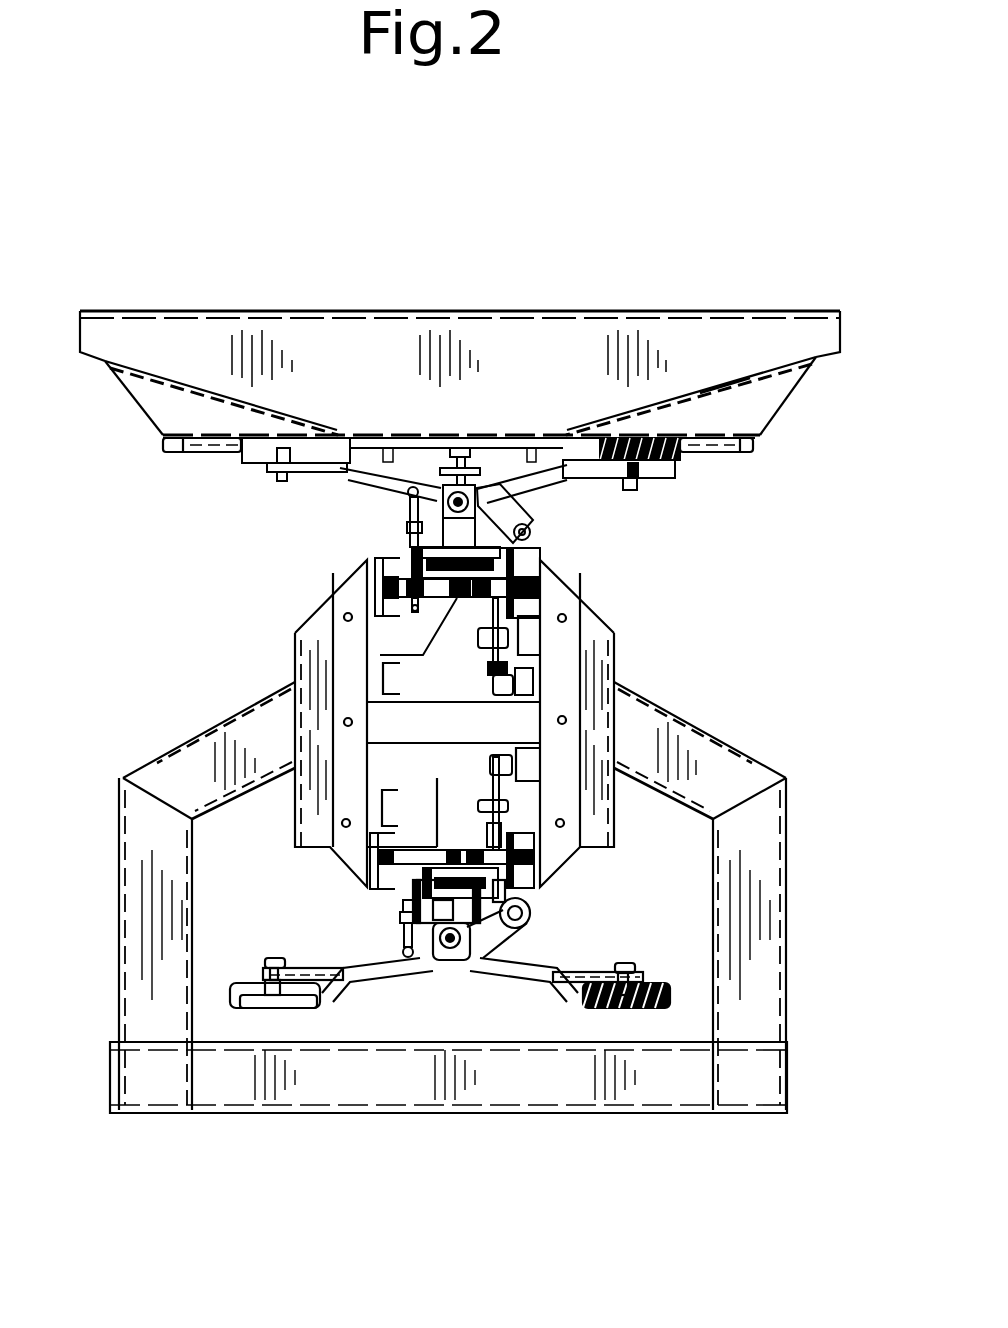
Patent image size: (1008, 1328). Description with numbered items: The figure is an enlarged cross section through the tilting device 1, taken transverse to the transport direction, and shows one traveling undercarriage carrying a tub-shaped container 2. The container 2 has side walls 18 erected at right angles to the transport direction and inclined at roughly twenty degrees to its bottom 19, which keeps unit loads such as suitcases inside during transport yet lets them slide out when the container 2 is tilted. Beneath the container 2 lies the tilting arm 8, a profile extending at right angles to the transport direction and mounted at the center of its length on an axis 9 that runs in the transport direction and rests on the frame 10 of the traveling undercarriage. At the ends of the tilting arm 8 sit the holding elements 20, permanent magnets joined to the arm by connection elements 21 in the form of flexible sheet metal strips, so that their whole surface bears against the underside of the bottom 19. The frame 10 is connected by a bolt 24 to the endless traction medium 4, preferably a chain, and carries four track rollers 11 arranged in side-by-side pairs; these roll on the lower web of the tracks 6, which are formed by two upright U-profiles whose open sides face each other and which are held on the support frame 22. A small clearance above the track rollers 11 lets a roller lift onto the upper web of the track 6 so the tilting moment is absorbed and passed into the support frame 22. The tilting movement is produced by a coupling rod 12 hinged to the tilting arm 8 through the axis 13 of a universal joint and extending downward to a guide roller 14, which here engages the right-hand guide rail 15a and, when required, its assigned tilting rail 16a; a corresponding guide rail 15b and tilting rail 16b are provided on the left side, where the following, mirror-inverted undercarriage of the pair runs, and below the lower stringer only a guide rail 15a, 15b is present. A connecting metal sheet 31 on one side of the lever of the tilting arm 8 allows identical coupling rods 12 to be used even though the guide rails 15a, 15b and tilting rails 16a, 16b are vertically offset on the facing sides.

The tilting device 1 is at (184, 134).
The container 2 is at (465, 345).
The traction medium 4 is at (425, 653).
The guide rail 6 is at (375, 558).
The tilting arm 8 is at (557, 477).
The axis 9 is at (438, 495).
The frame 10 is at (472, 947).
The track roller 11 is at (353, 880).
The coupling rod 12 is at (507, 545).
The axis of a universal joint 13 is at (533, 530).
The guide roller 14 is at (513, 697).
The guide rail 15a is at (537, 681).
The guide rail 15b is at (348, 617).
The tilting rail 16a is at (537, 640).
The tilting rail 16b is at (383, 678).
The side wall 18 is at (735, 383).
The bottom 19 is at (367, 433).
The holding element 20 is at (694, 458).
The connection element 21 is at (307, 476).
The support frame 22 is at (755, 905).
The bolt 24 is at (437, 778).
The connecting metal sheet 31 is at (505, 513).